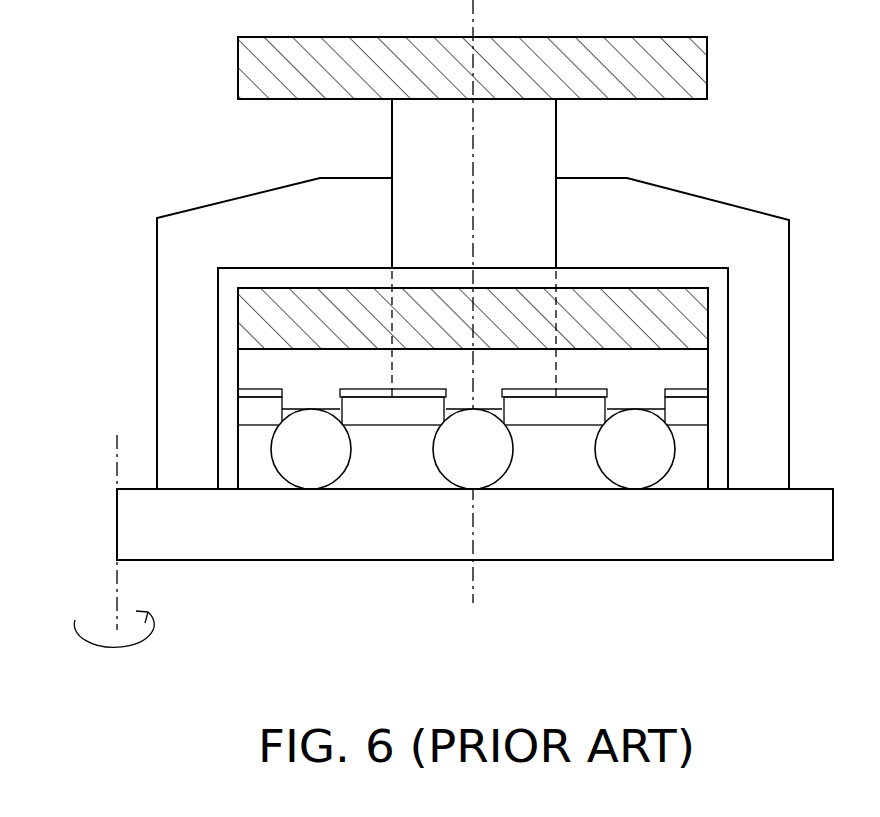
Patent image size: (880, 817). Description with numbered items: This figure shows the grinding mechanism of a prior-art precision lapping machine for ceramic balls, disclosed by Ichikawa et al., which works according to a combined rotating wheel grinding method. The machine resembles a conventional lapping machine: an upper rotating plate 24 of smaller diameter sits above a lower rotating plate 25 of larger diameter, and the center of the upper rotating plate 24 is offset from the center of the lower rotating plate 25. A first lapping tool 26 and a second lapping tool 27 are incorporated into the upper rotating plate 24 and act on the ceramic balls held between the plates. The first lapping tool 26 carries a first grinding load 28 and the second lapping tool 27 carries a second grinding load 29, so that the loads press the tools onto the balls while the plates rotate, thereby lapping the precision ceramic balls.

The upper rotating plate 24 is at (258, 318).
The lower rotating plate 25 is at (148, 526).
The first lapping tool 26 is at (688, 372).
The second lapping tool 27 is at (688, 413).
The first grinding load 28 is at (678, 293).
The second grinding load 29 is at (708, 70).